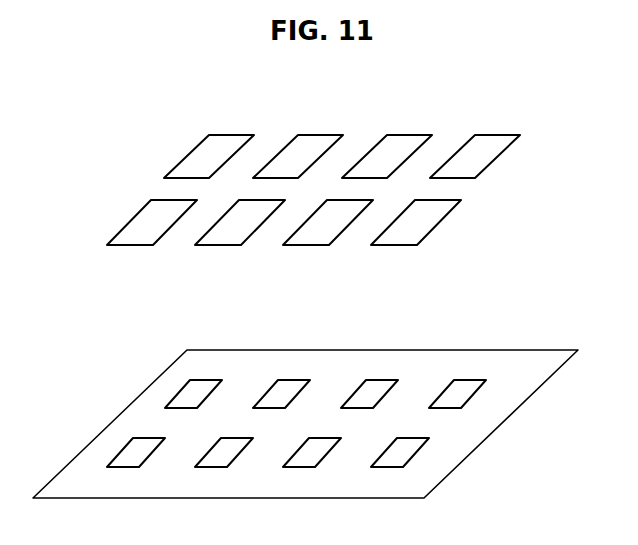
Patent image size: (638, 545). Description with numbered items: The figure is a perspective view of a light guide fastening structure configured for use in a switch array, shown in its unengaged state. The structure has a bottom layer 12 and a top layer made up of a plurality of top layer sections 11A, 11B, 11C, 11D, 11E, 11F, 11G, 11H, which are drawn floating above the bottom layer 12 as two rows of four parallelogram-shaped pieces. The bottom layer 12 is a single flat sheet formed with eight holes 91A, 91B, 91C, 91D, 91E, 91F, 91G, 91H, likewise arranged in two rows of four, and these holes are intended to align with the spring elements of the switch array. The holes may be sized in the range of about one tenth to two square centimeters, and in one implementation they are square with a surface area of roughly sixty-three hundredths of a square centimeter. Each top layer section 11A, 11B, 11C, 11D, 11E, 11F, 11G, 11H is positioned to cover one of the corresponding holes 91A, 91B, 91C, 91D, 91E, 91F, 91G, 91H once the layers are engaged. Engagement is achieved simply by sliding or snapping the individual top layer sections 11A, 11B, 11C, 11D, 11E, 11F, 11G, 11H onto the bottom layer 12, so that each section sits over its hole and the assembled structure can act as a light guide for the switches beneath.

The top layer section 11A is at (230, 135).
The top layer section 11B is at (318, 135).
The top layer section 11C is at (409, 135).
The top layer section 11D is at (497, 135).
The top layer section 11E is at (122, 245).
The top layer section 11F is at (211, 245).
The top layer section 11G is at (300, 245).
The top layer section 11H is at (388, 245).
The bottom layer 12 is at (117, 417).
The hole 91A is at (197, 382).
The hole 91B is at (285, 382).
The hole 91C is at (373, 382).
The hole 91D is at (461, 382).
The hole 91E is at (119, 453).
The hole 91F is at (207, 453).
The hole 91G is at (295, 453).
The hole 91H is at (383, 453).